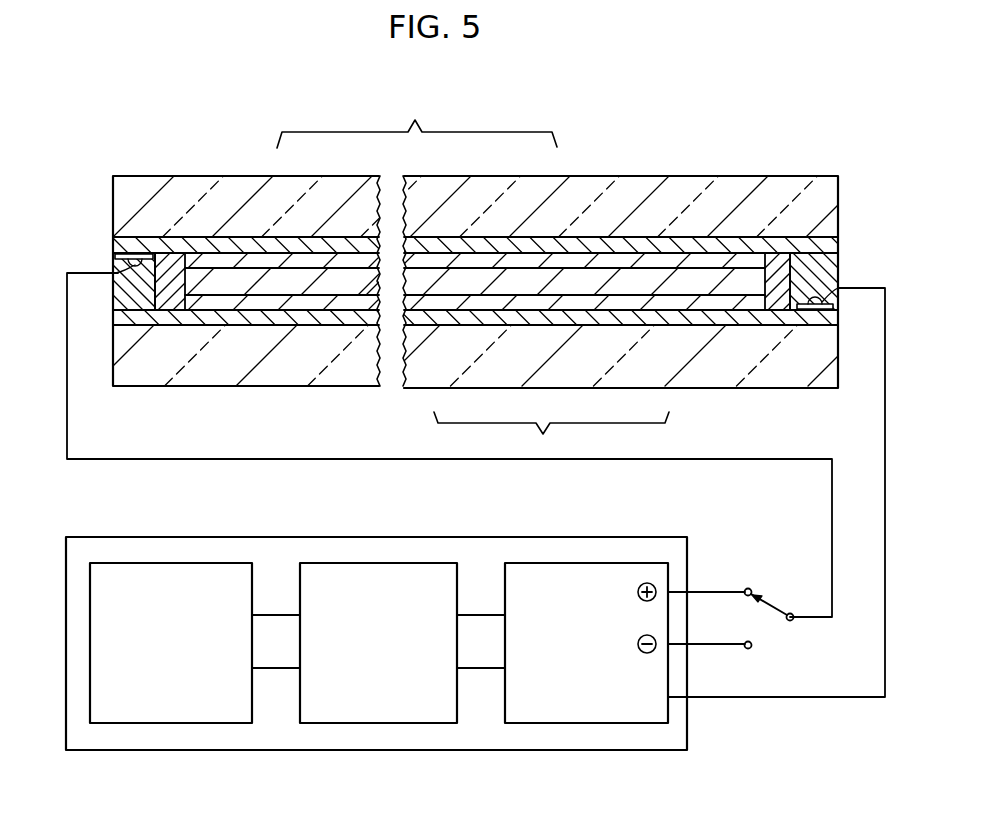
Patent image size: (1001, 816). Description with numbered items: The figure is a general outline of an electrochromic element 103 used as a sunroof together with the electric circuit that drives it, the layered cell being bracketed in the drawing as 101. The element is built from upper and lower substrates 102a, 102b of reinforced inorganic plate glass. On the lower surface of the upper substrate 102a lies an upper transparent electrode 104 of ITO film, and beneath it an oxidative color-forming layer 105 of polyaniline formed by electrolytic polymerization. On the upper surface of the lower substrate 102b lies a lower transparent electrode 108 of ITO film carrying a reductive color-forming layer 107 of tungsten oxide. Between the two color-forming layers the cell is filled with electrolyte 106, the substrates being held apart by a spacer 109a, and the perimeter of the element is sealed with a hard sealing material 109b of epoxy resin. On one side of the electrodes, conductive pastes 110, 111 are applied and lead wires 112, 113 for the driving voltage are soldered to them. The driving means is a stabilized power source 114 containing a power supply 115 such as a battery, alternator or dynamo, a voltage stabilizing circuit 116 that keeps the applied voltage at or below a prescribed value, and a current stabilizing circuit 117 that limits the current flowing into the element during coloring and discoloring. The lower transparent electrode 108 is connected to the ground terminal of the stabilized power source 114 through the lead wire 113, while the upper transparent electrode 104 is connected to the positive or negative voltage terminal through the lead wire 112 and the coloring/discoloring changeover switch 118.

The electrochromic element 101 is at (473, 278).
The upper substrate 102a is at (320, 186).
The lower substrate 102b is at (478, 366).
The electrochromic element 103 is at (648, 148).
The upper transparent electrode 104 is at (474, 244).
The oxidative color-forming layer 105 is at (528, 262).
The electrolyte 106 is at (588, 282).
The reductive color-forming layer 107 is at (545, 302).
The lower transparent electrode 108 is at (647, 320).
The spacer 109a is at (778, 262).
The hard sealing material 109b is at (836, 266).
The conductive paste 110 is at (116, 262).
The conductive paste 111 is at (833, 309).
The lead wire 112 is at (67, 396).
The lead wire 113 is at (885, 408).
The stabilized power source 114 is at (66, 556).
The power supply 115 is at (177, 570).
The voltage stabilizing circuit 116 is at (371, 572).
The current stabilizing circuit 117 is at (574, 576).
The coloring/discoloring changeover switch 118 is at (782, 598).